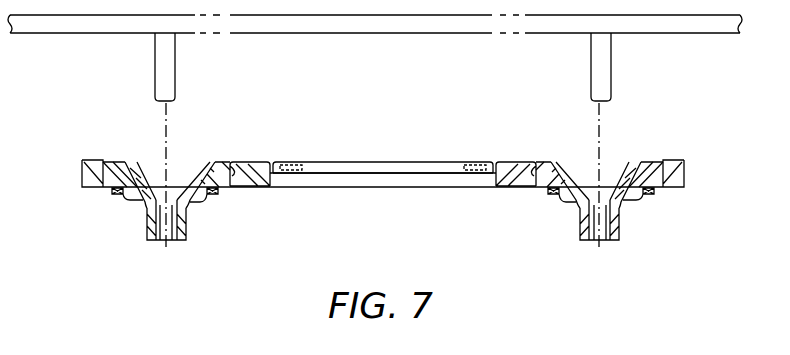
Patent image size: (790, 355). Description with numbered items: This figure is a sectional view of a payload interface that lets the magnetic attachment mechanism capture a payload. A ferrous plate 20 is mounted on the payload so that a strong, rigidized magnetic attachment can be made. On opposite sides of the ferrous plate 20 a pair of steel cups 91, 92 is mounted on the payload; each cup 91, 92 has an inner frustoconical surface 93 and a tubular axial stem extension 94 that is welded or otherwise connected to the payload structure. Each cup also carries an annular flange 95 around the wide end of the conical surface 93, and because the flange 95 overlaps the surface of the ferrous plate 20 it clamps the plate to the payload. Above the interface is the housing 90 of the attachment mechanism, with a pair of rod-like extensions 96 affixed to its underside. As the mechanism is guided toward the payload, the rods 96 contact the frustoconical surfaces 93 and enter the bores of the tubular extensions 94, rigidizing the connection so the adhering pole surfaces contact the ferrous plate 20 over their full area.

The ferrous plate 20 is at (337, 160).
The housing 90 is at (352, 33).
The steel cup 91 is at (112, 204).
The steel cup 92 is at (648, 204).
The inner frustoconical surface 93 is at (143, 174).
The tubular axial stem extension 94 is at (146, 229).
The annular flange 95 is at (234, 167).
The rod-like extension 96 is at (176, 82).